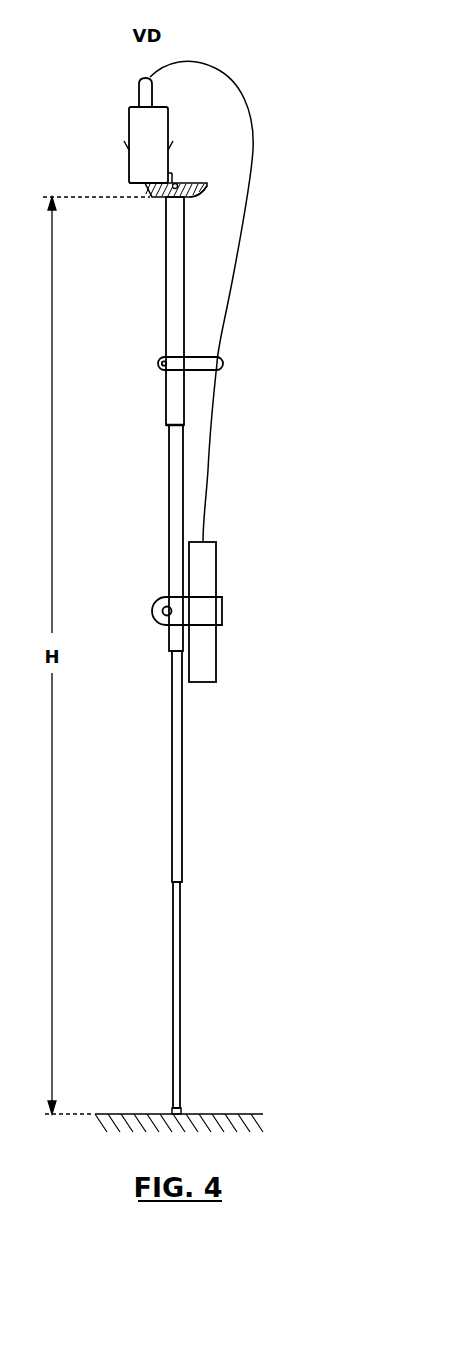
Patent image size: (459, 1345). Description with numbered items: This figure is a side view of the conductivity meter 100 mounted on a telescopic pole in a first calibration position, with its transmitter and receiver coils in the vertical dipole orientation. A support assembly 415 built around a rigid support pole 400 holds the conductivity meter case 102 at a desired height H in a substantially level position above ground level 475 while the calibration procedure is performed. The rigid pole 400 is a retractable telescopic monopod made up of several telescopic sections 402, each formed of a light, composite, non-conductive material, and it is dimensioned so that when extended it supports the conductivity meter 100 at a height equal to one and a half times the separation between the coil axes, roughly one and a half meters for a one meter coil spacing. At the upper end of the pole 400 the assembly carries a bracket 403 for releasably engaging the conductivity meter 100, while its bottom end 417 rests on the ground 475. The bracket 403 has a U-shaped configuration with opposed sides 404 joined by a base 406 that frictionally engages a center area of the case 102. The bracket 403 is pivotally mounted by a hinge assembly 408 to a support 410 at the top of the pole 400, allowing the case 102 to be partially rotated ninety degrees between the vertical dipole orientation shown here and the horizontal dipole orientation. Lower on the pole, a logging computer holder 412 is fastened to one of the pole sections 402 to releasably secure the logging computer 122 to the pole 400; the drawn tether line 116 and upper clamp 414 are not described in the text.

The conductivity meter 100 is at (128, 120).
The conductivity meter case 102 is at (168, 120).
The tether line 116 is at (233, 277).
The logging computer 122 is at (217, 562).
The rigid support pole 400 is at (231, 655).
The telescopic sections 402 is at (165, 295).
The bracket 403 is at (129, 158).
The opposed sides 404 is at (169, 158).
The base 406 is at (147, 197).
The hinge assembly 408 is at (179, 185).
The support 410 is at (205, 196).
The logging computer holder 412 is at (223, 612).
The upper clamp 414 is at (223, 362).
The support assembly 415 is at (166, 403).
The bottom end 417 is at (173, 1112).
The ground level 475 is at (237, 1113).